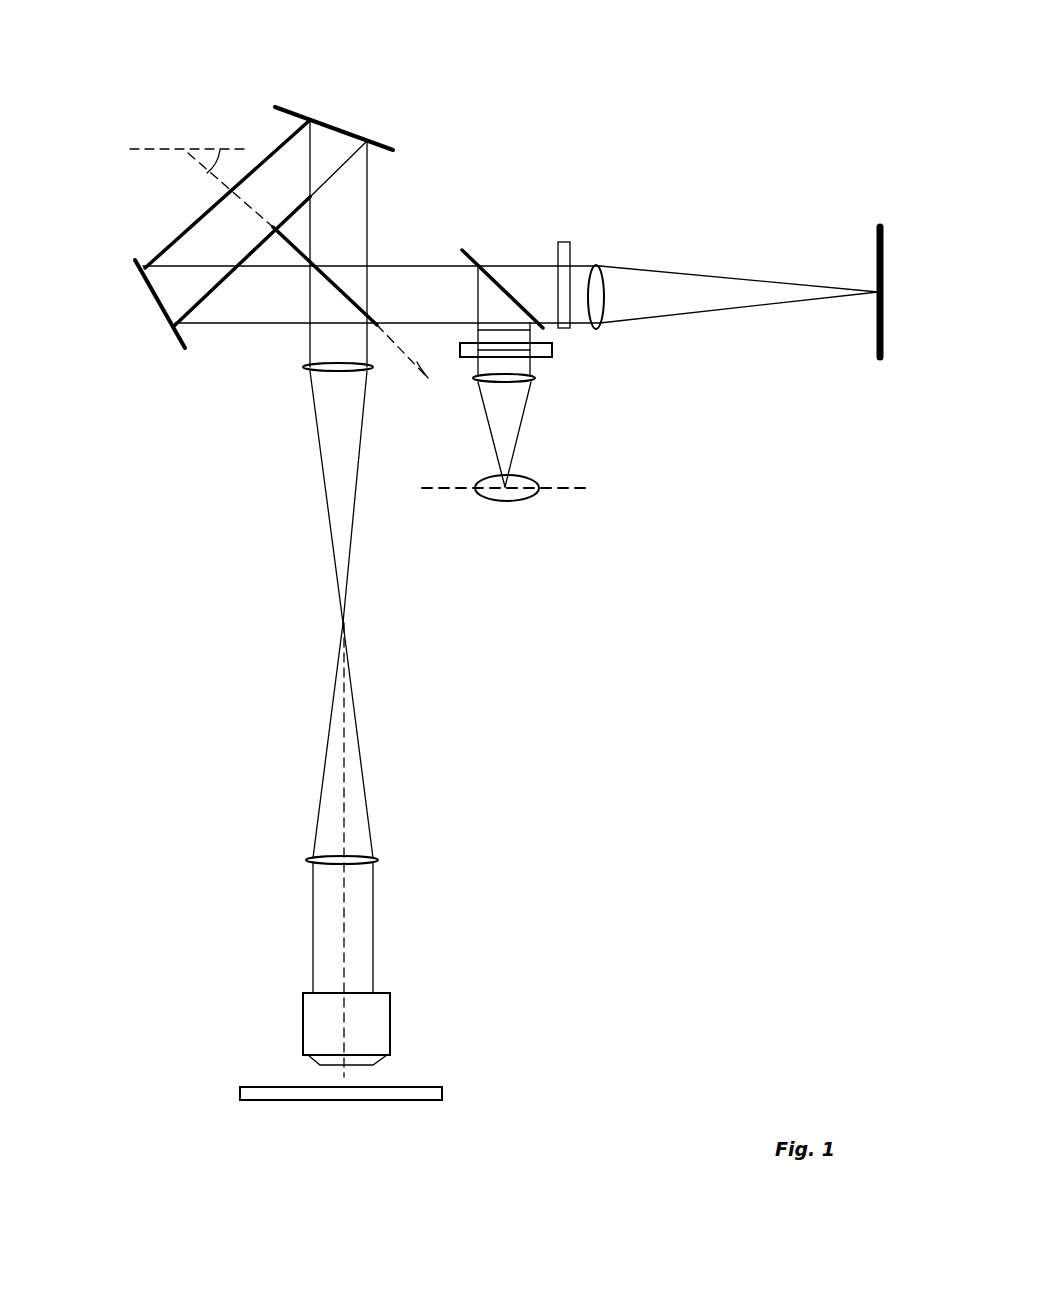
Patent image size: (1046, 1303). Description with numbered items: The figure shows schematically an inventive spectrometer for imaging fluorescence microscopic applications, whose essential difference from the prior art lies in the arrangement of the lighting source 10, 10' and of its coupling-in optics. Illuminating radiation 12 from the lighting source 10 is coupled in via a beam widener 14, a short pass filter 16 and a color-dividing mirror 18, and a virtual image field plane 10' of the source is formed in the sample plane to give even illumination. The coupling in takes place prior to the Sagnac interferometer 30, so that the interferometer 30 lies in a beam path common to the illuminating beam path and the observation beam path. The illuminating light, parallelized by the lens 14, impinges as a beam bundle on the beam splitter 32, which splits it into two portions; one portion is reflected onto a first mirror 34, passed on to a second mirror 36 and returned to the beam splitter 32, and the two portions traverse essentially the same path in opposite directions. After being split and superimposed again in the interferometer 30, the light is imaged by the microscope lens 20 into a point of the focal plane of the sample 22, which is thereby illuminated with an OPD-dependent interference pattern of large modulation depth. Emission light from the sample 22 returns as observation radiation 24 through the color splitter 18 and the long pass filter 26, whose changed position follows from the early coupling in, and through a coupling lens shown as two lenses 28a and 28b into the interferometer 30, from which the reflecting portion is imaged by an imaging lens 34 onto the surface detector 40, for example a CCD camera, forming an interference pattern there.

The lighting source 10 is at (565, 477).
The virtual image field plane 10' is at (541, 508).
The illuminating radiation 12 is at (530, 333).
The beam widener 14 is at (535, 383).
The short pass filter 16 is at (547, 350).
The color-dividing mirror 18 is at (470, 253).
The microscope lens 20 is at (367, 1037).
The sample 22 is at (433, 1097).
The observation radiation 24 is at (715, 303).
The long pass filter 26 is at (562, 242).
The coupling lens 28a is at (370, 855).
The coupling lens 28b is at (303, 367).
The Sagnac interferometer 30 is at (432, 178).
The beam splitter 32 is at (343, 303).
The first mirror 34 is at (597, 265).
The second mirror 36 is at (337, 128).
The surface detector 40 is at (877, 250).